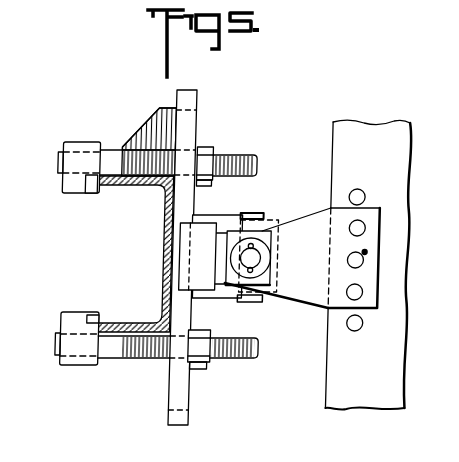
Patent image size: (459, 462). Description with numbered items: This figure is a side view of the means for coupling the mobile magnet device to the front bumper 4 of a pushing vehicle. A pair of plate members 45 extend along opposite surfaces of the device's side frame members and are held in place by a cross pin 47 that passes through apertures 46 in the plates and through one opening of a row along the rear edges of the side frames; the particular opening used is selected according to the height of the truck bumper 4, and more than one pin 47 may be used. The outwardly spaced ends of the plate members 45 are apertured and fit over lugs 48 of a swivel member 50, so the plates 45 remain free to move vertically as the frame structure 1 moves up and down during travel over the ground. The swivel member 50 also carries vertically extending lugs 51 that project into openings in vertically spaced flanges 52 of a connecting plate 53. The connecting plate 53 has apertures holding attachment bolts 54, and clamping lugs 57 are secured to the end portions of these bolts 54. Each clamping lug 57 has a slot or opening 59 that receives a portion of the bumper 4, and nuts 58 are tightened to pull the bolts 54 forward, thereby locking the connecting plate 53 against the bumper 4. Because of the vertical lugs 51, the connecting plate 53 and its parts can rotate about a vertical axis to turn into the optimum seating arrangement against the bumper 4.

The frame structure 1 is at (387, 107).
The bumper 4 is at (167, 190).
The plate members 45 is at (318, 298).
The apertures 46 is at (370, 295).
The cross pins 47 is at (353, 263).
The lugs 48 is at (267, 257).
The swivel member 50 is at (231, 265).
The vertically extending lugs 51 is at (255, 215).
The vertically spaced flanges 52 is at (220, 215).
The connecting plate 53 is at (191, 118).
The attachment bolts 54 is at (252, 155).
The clamping lugs 57 is at (75, 183).
The nuts 58 is at (214, 150).
The slots or openings 59 is at (93, 193).